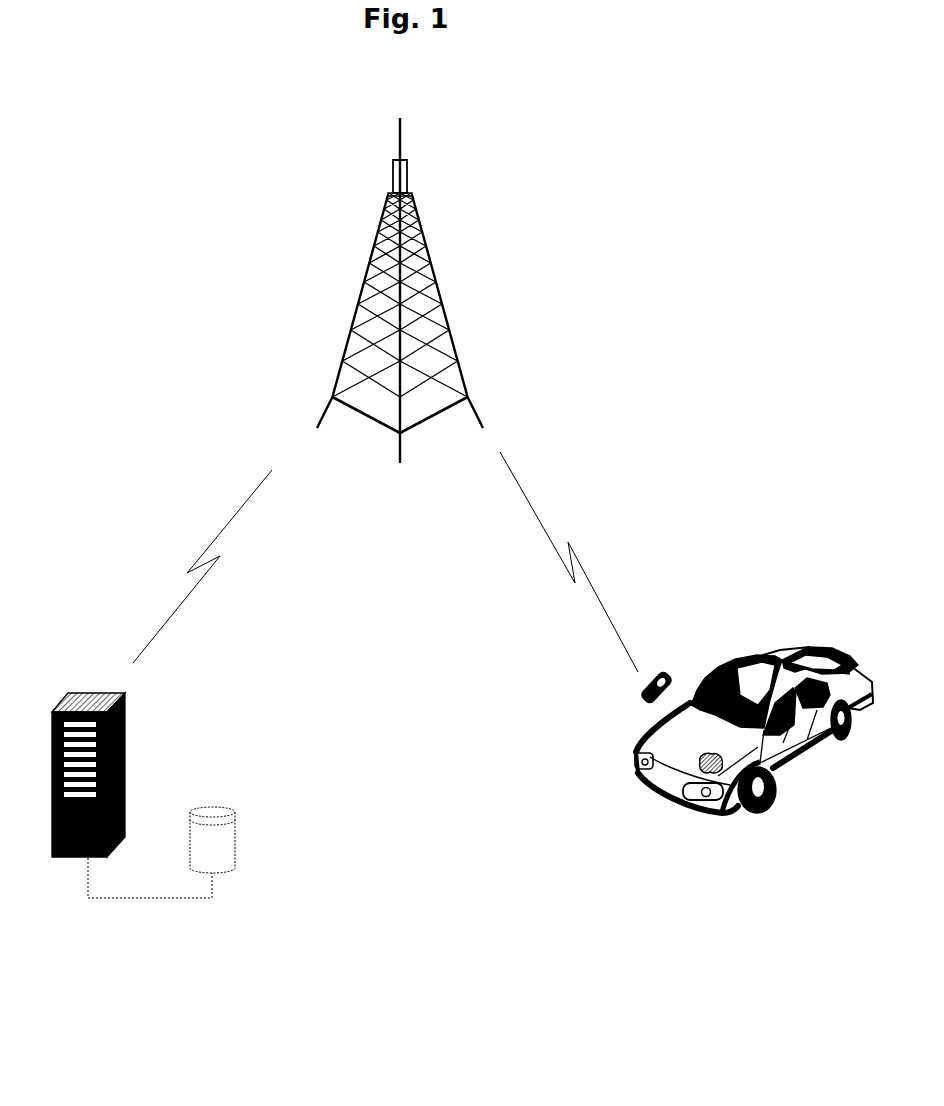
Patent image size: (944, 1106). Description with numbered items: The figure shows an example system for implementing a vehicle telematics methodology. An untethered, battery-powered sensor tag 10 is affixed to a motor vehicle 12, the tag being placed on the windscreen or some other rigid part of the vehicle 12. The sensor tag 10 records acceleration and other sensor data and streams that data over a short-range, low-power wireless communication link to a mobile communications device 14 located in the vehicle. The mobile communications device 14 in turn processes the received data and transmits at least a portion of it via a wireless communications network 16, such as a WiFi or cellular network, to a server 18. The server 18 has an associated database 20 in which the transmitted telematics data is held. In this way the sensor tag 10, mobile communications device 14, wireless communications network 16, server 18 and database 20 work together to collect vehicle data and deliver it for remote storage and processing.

The sensor tag 10 is at (720, 773).
The motor vehicle 12 is at (755, 657).
The mobile communications device 14 is at (642, 698).
The wireless communications network 16 is at (383, 231).
The server 18 is at (117, 777).
The database 20 is at (235, 840).